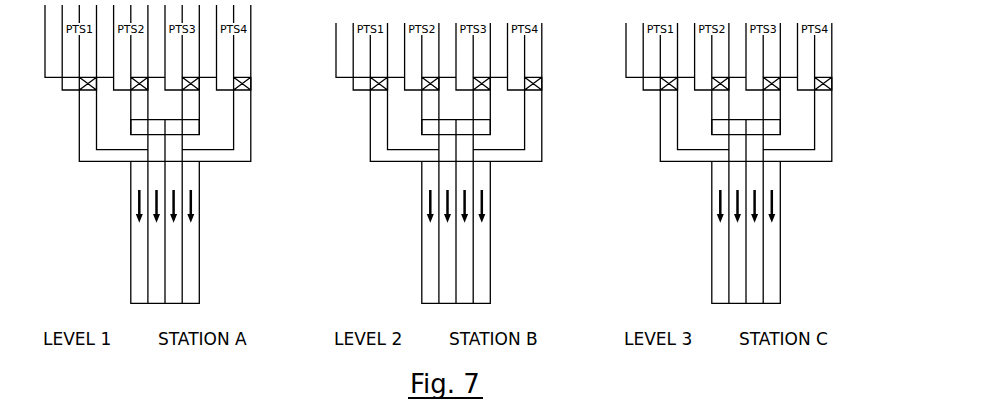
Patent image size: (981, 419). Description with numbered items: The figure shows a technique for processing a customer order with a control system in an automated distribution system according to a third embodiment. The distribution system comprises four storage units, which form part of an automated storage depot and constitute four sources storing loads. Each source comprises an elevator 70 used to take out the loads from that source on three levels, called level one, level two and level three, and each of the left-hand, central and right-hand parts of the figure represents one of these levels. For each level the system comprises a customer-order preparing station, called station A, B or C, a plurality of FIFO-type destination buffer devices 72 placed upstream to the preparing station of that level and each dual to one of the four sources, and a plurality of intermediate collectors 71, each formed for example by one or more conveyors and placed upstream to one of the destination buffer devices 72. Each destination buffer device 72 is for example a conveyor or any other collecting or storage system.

The elevator 70 is at (262, 217).
The intermediate collector 71 is at (262, 245).
The destination buffer device 72 is at (192, 262).